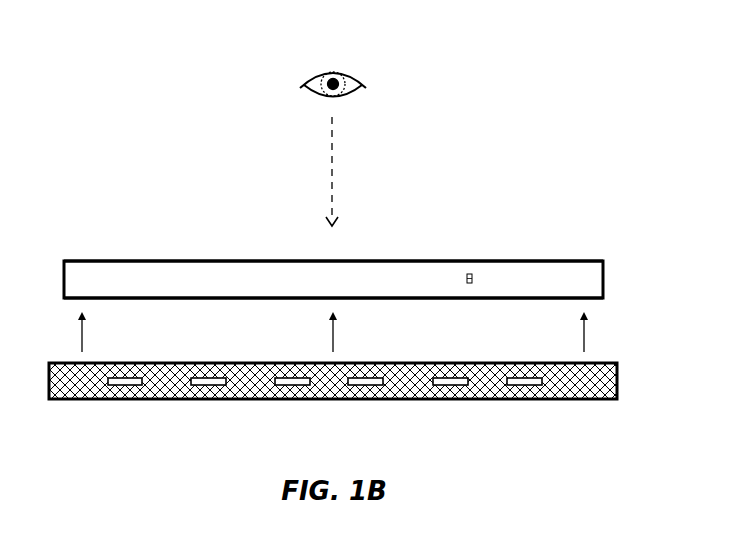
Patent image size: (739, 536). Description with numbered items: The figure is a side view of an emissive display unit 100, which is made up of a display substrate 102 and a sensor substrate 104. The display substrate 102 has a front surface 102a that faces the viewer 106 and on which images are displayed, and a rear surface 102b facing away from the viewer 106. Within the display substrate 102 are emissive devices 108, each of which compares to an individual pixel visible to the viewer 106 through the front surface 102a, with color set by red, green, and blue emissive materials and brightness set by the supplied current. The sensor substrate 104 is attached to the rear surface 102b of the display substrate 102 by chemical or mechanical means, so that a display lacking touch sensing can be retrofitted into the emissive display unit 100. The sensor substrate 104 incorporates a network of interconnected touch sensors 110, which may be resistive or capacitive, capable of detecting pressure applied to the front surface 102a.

The emissive display unit 100 is at (66, 61).
The display substrate 102 is at (605, 279).
The front surface 102a is at (150, 260).
The rear surface 102b is at (215, 299).
The sensor substrate 104 is at (617, 383).
The viewer 106 is at (333, 68).
The emissive device 108 is at (474, 274).
The touch sensors 110 is at (452, 387).